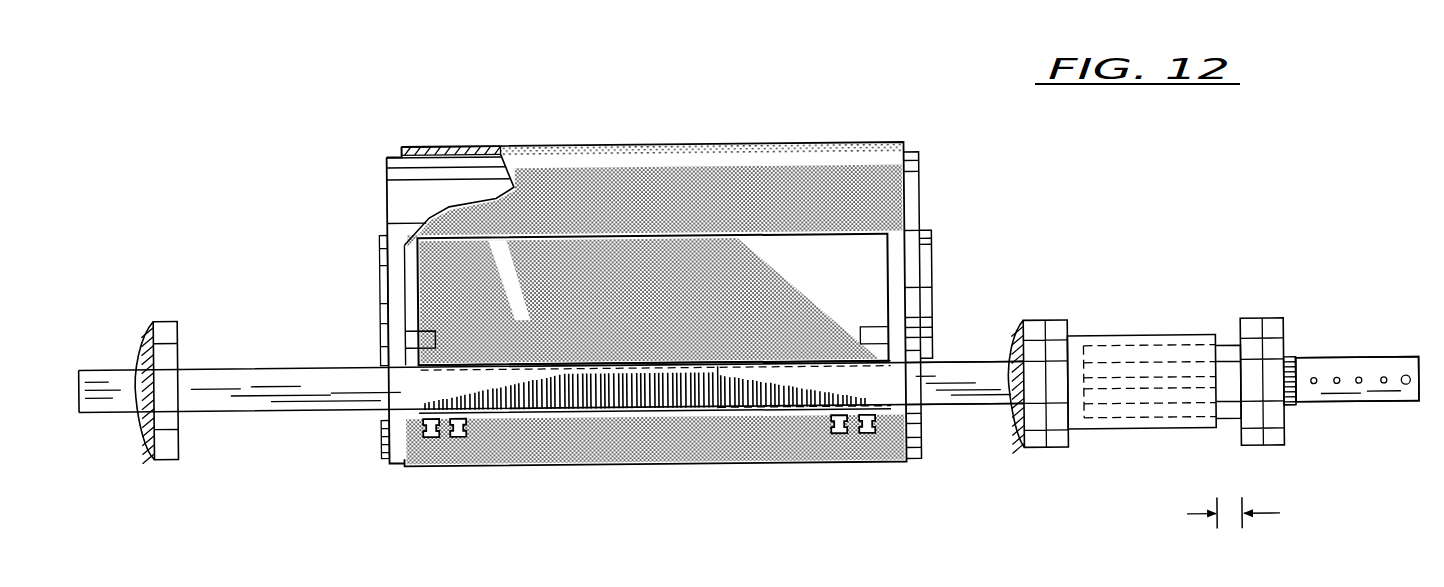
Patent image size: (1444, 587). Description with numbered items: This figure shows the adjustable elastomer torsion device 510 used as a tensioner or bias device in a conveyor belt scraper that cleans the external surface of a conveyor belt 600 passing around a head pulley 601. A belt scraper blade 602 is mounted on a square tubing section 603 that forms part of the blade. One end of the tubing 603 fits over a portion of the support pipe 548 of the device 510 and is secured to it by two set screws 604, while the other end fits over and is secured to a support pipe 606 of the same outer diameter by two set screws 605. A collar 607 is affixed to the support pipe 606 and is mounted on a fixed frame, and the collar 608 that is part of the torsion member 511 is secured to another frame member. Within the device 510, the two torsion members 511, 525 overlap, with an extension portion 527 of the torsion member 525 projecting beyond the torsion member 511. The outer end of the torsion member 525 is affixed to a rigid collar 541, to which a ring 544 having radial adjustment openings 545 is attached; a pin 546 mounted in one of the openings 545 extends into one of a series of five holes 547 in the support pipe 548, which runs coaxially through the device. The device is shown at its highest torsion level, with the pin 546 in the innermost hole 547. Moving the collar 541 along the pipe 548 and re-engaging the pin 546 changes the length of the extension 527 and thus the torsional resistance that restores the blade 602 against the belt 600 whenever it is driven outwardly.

The conveyor belt 600 is at (770, 143).
The head pulley 601 is at (400, 193).
The belt scraper blade 602 is at (877, 280).
The square tubing section 603 is at (637, 390).
The set screws 604 is at (838, 436).
The set screws 605 is at (430, 436).
The support pipe 606 is at (337, 381).
The collar 607 is at (167, 343).
The collar 608 is at (1037, 345).
The torsion member 511 is at (1133, 339).
The adjustable elastomer torsion device 510 is at (1132, 455).
The torsion member 525 is at (1228, 350).
The collar 541 is at (1250, 322).
The ring 544 is at (1293, 362).
The radial adjustment openings 545 is at (1288, 417).
The pin 546 is at (1314, 383).
The holes 547 is at (1383, 382).
The support pipe 548 is at (973, 409).
The extension portion 527 is at (1224, 519).